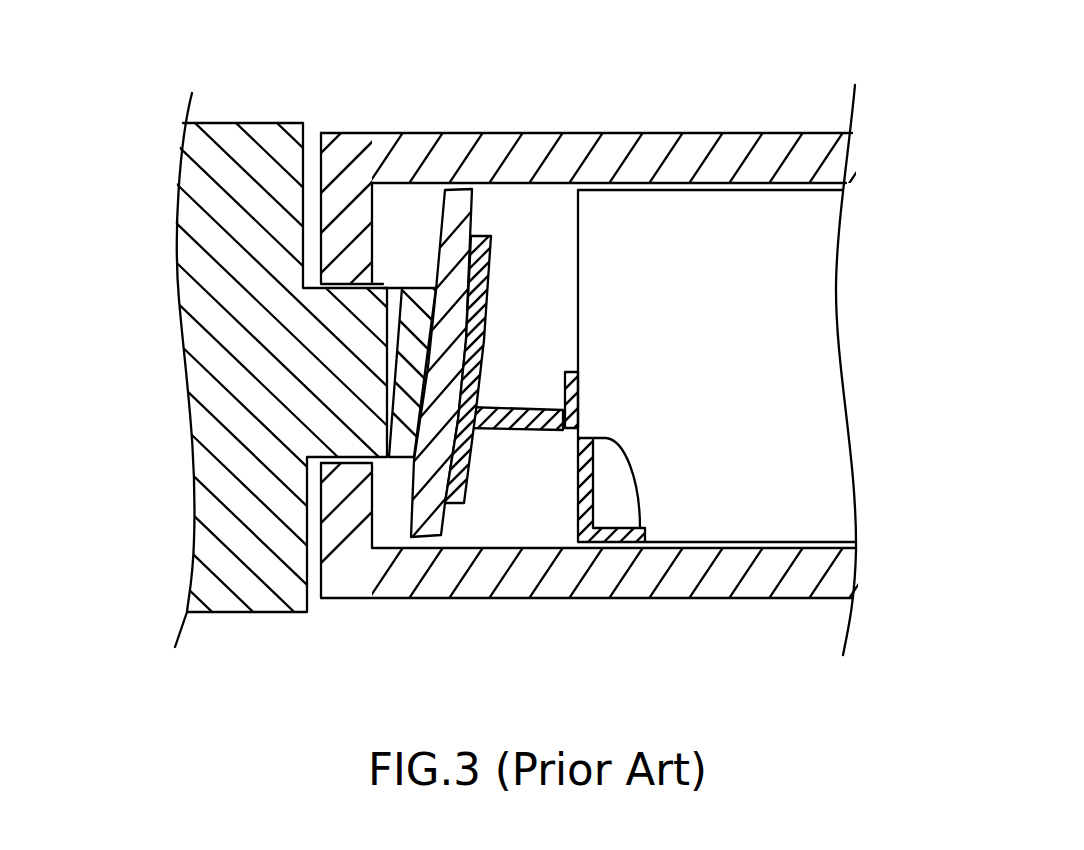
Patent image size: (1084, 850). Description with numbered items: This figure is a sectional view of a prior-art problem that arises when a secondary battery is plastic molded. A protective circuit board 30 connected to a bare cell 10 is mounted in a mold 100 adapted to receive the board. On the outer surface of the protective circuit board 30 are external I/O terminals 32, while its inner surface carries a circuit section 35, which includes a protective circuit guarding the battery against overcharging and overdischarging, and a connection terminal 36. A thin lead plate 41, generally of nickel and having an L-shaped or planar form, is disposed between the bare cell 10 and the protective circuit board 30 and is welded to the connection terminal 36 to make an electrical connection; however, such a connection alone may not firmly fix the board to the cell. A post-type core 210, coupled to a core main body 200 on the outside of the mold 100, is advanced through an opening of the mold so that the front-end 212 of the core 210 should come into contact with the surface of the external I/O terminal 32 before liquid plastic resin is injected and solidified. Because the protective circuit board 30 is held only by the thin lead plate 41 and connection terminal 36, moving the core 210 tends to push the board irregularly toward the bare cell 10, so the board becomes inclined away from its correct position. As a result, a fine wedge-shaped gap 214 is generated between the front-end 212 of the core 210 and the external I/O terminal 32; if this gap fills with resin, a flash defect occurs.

The bare cell 10 is at (803, 272).
The mold 100 is at (663, 148).
The core main body 200 is at (203, 430).
The core 210 is at (357, 300).
The front-end of the core 212 is at (390, 340).
The wedge-shaped gap 214 is at (393, 280).
The protective circuit board 30 is at (411, 537).
The external I/O terminal 32 is at (408, 377).
The circuit section 35 is at (491, 279).
The connection terminal 36 is at (519, 430).
The lead plate 41 is at (582, 393).